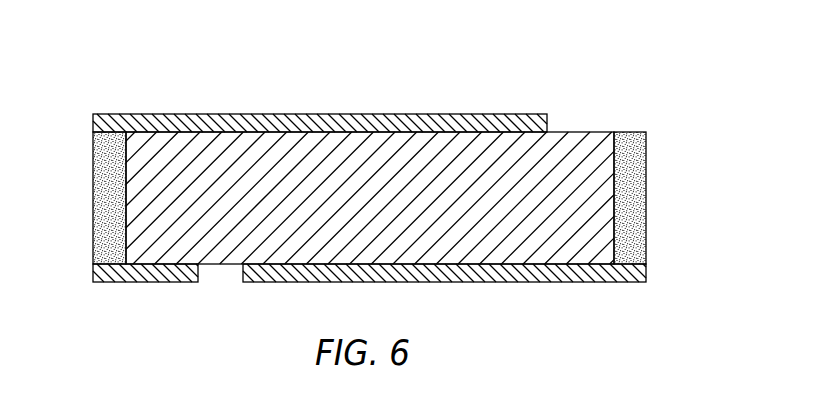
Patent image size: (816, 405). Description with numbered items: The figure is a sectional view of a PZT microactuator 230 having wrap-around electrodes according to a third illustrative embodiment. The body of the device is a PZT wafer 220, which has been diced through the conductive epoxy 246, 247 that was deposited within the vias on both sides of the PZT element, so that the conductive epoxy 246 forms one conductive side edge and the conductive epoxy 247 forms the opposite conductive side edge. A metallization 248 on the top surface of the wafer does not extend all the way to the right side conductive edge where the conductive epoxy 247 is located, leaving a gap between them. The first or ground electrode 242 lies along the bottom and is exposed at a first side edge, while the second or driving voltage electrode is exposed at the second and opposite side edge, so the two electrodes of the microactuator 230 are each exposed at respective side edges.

The semiconductor package assembly 230 is at (665, 71).
The PZT wafer 220 is at (345, 143).
The metallization 248 is at (455, 120).
The ground electrode 242 is at (495, 282).
The conductive epoxy 246 is at (107, 215).
The conductive epoxy 247 is at (632, 202).